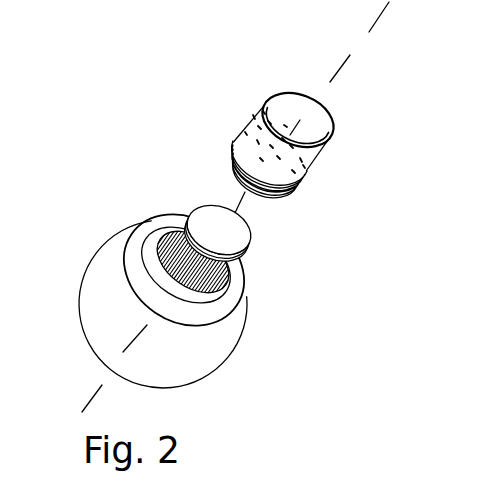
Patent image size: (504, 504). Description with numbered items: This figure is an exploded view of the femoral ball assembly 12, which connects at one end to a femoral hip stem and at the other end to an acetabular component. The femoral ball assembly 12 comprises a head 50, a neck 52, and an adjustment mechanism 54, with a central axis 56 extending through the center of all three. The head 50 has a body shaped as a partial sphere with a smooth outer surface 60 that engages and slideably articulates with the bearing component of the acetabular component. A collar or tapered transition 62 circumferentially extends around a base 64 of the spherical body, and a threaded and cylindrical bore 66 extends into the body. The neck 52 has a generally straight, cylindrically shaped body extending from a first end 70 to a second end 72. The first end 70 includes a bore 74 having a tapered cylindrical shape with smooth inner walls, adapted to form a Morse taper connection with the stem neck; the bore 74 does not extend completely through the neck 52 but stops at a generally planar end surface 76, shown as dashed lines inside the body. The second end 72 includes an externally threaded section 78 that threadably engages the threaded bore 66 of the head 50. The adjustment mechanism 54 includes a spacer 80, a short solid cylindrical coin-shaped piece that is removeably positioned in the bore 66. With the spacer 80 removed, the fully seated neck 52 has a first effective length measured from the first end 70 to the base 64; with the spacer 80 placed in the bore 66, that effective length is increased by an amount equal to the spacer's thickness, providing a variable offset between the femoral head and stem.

The femoral ball assembly 12 is at (93, 126).
The head 50 is at (82, 261).
The neck 52 is at (301, 129).
The adjustment mechanism 54 is at (182, 185).
The central axis 56 is at (388, 21).
The smooth outer surface 60 is at (198, 359).
The collar or tapered transition 62 is at (245, 316).
The base 64 is at (258, 287).
The threaded and cylindrical bore 66 is at (230, 266).
The first end 70 is at (265, 88).
The second end 72 is at (215, 147).
The bore 74 is at (312, 127).
The planar end surface 76 is at (285, 193).
The externally threaded section 78 is at (282, 197).
The spacer 80 is at (187, 219).